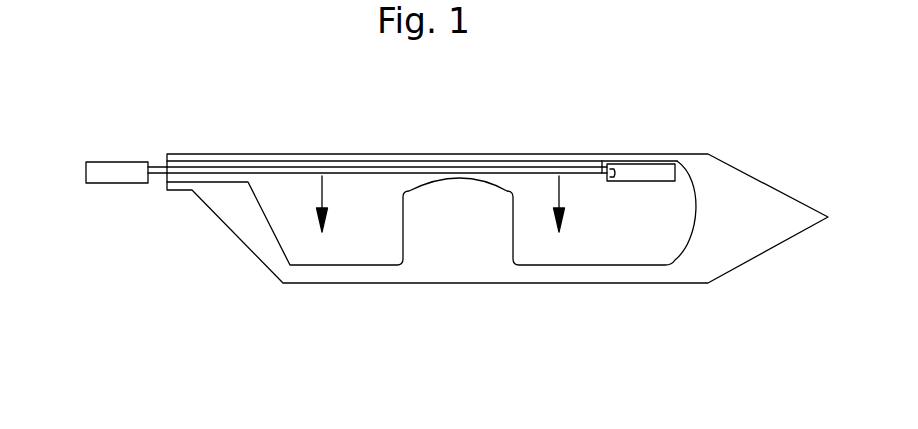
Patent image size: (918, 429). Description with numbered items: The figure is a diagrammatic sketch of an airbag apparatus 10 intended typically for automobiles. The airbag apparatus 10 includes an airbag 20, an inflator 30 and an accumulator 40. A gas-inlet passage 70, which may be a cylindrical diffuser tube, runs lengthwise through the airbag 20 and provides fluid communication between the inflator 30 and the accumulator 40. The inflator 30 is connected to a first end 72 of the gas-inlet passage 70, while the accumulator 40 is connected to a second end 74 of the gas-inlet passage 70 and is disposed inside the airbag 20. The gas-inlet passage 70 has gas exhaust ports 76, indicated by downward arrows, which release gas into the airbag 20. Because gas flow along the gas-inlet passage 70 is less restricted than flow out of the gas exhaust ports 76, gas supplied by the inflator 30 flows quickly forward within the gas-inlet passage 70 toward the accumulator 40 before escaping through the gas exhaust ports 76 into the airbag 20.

The airbag apparatus 10 is at (495, 97).
The airbag 20 is at (377, 258).
The inflator 30 is at (105, 172).
The accumulator 40 is at (640, 170).
The gas-inlet passage 70 is at (281, 171).
The first end 72 is at (155, 166).
The second end 74 is at (600, 163).
The gas exhaust ports 76 is at (321, 172).